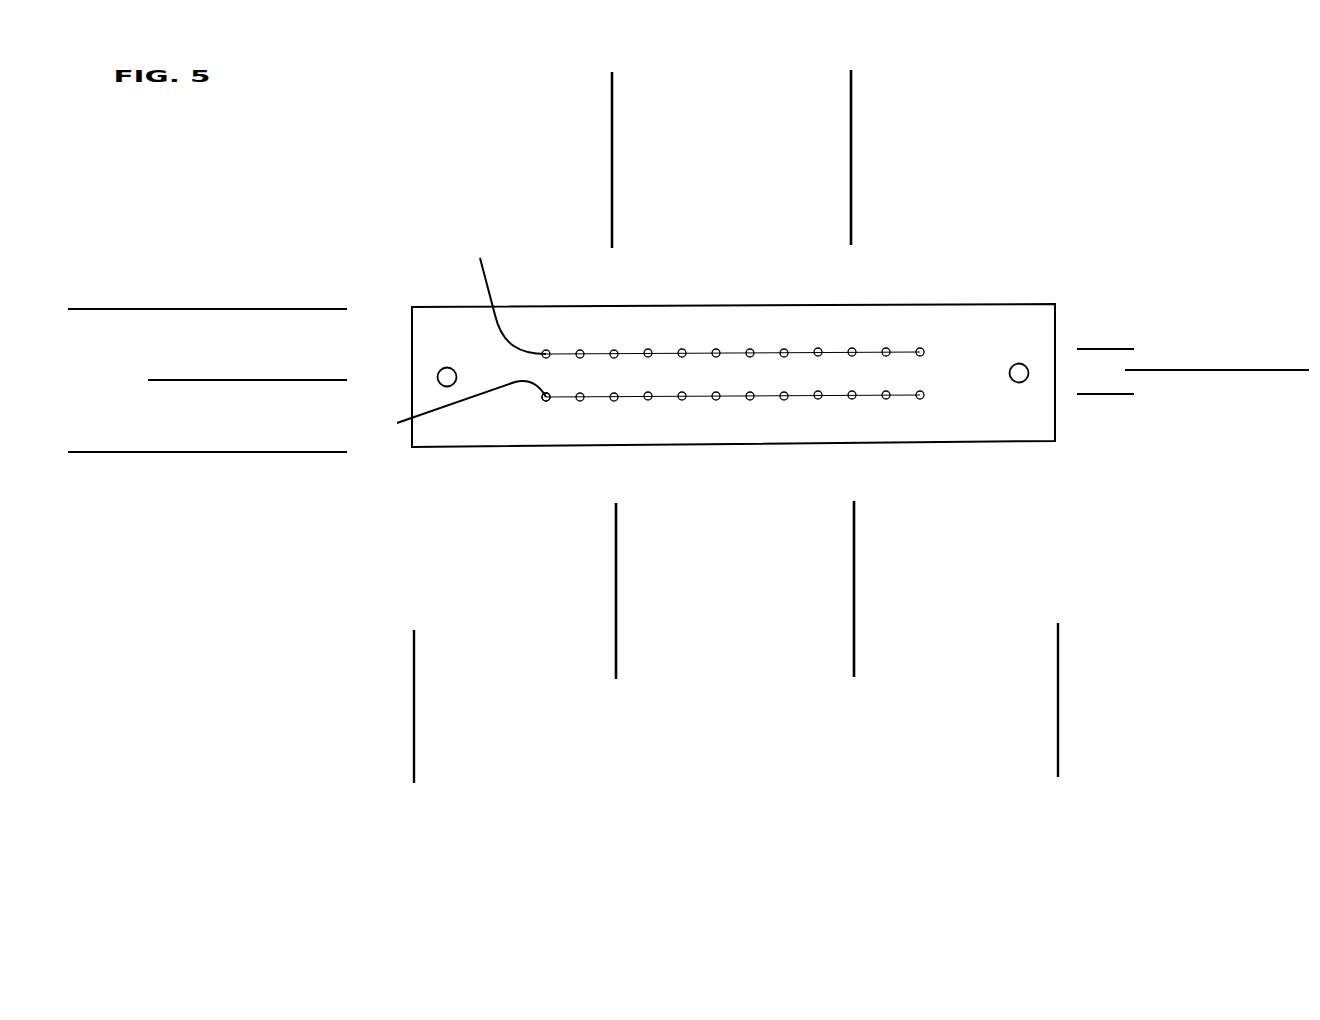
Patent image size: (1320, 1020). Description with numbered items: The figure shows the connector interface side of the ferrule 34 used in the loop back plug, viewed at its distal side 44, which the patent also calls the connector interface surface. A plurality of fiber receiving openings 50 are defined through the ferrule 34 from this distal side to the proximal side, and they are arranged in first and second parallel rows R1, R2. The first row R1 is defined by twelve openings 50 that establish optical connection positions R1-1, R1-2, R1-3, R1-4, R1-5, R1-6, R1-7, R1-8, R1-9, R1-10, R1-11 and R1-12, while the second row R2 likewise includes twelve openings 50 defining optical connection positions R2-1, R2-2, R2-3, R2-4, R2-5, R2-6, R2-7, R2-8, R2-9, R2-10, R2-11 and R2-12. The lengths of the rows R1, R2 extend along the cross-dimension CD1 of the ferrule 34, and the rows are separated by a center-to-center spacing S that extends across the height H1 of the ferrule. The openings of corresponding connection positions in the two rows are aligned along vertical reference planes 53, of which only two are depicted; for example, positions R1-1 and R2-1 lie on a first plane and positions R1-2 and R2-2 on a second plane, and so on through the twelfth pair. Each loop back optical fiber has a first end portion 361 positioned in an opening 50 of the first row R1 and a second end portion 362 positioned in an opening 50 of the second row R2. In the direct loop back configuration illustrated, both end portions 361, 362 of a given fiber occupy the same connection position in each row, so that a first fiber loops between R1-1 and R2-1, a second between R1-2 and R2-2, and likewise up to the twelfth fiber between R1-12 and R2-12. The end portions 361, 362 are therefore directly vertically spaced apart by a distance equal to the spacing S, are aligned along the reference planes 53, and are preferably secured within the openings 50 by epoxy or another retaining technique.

The ferrule 34 is at (433, 301).
The first end portion 361 is at (506, 295).
The second end portion 362 is at (459, 413).
The fiber receiving openings 50 is at (546, 400).
The reference planes 53 is at (612, 141).
The distal side 44 is at (990, 426).
The first row R1 is at (936, 342).
The second row R2 is at (936, 407).
The first optical connection position of the first row R1-1 is at (546, 350).
The second optical connection position of the first row R1-2 is at (580, 350).
The third optical connection position of the first row R1-3 is at (614, 350).
The fourth optical connection position of the first row R1-4 is at (648, 349).
The fifth optical connection position of the first row R1-5 is at (682, 349).
The sixth optical connection position of the first row R1-6 is at (716, 349).
The seventh optical connection position of the first row R1-7 is at (750, 349).
The eighth optical connection position of the first row R1-8 is at (784, 349).
The ninth optical connection position of the first row R1-9 is at (818, 348).
The tenth optical connection position of the first row R1-10 is at (852, 348).
The eleventh optical connection position of the first row R1-11 is at (886, 348).
The twelfth optical connection position of the first row R1-12 is at (920, 348).
The first optical connection position of the second row R2-1 is at (546, 401).
The second optical connection position of the second row R2-2 is at (580, 401).
The third optical connection position of the second row R2-3 is at (614, 401).
The fourth optical connection position of the second row R2-4 is at (648, 400).
The fifth optical connection position of the second row R2-5 is at (682, 400).
The sixth optical connection position of the second row R2-6 is at (716, 400).
The seventh optical connection position of the second row R2-7 is at (750, 400).
The eighth optical connection position of the second row R2-8 is at (784, 400).
The ninth optical connection position of the second row R2-9 is at (818, 399).
The tenth optical connection position of the second row R2-10 is at (852, 399).
The eleventh optical connection position of the second row R2-11 is at (886, 399).
The twelfth optical connection position of the second row R2-12 is at (920, 399).
The height H1 is at (105, 311).
The center-to-center spacing S is at (1106, 351).
The cross-dimension CD1 is at (1056, 700).